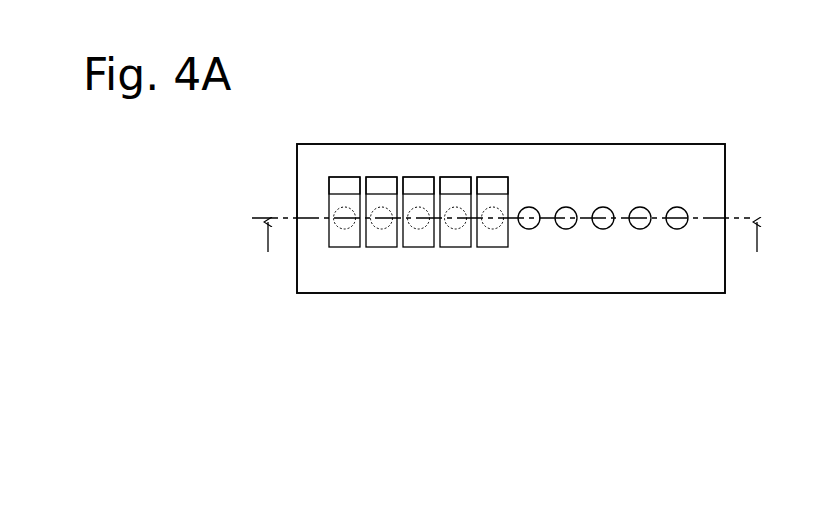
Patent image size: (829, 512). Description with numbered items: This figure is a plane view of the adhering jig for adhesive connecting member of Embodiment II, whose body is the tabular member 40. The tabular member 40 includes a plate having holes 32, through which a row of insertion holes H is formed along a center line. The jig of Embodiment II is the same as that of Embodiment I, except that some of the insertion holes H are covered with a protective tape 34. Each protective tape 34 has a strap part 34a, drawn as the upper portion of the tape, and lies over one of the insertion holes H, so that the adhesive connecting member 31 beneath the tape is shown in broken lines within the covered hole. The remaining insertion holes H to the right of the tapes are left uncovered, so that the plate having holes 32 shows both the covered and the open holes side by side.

The tabular member 40 is at (510, 239).
The plate having holes 32 is at (357, 282).
The protective tape 34 is at (371, 161).
The strap part of the protective tape 34a is at (346, 186).
The adhesive connecting member 31 is at (450, 207).
The insertion hole H is at (643, 206).